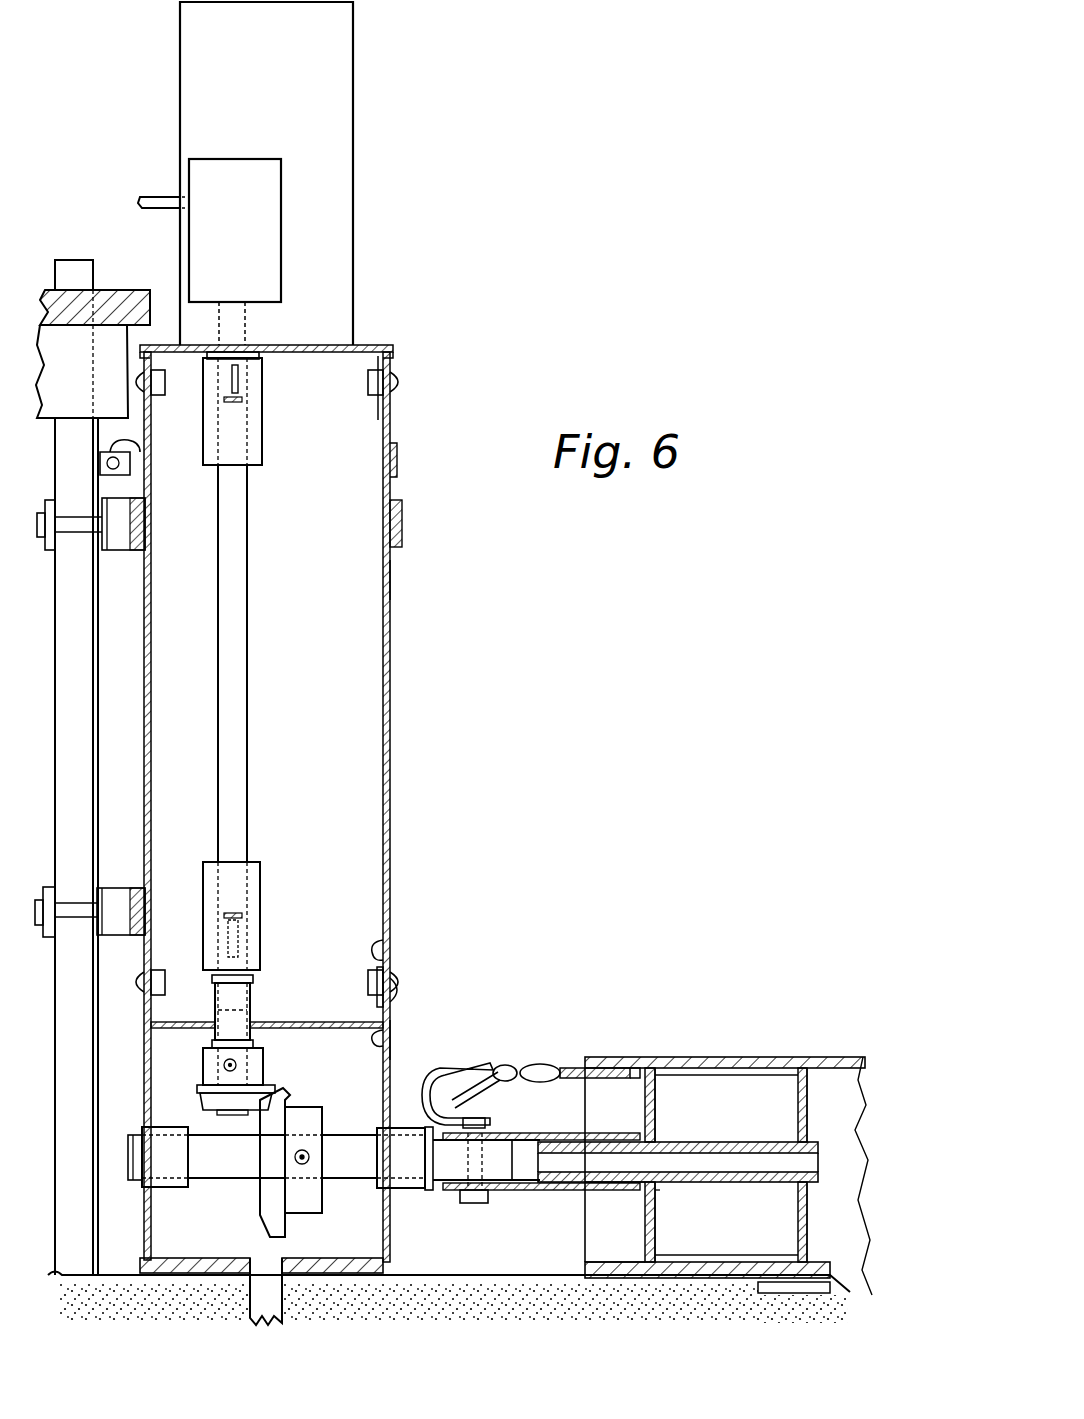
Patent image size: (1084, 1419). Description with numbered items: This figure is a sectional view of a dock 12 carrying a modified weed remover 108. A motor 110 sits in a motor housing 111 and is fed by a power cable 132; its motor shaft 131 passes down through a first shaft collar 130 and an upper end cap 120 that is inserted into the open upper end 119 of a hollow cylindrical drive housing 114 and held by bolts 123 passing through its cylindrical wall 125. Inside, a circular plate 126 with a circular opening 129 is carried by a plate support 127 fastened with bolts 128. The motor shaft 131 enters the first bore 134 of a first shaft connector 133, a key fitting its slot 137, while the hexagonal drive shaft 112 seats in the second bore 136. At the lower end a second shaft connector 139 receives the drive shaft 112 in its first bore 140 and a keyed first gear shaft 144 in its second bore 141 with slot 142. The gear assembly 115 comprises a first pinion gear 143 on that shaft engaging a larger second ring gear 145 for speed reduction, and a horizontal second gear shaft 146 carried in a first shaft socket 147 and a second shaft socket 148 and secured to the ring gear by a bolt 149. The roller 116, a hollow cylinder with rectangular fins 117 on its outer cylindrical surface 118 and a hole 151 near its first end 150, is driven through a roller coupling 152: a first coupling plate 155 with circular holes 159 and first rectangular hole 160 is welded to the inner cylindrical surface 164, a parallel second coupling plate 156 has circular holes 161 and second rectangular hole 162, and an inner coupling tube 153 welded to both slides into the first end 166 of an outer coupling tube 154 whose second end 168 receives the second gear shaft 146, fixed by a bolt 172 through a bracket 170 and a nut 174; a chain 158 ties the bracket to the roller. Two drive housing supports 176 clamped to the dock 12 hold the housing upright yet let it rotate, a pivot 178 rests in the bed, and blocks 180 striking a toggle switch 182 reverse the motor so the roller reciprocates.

The dock 12 is at (120, 300).
The weed remover 108 is at (492, 150).
The motor 110 is at (265, 205).
The motor housing 111 is at (330, 125).
The drive shaft 112 is at (230, 620).
The drive housing 114 is at (398, 357).
The gear assembly 115 is at (285, 1062).
The roller 116 is at (735, 1055).
The rectangular fins 117 is at (790, 1288).
The outer cylindrical surface 118 is at (655, 1055).
The upper end 119 is at (392, 370).
The upper end cap 120 is at (370, 345).
The bolts 123 is at (135, 380).
The cylindrical wall 125 is at (392, 578).
The circular plate 126 is at (392, 1045).
The plate support 127 is at (392, 945).
The bolts 128 is at (395, 985).
The circular opening 129 is at (250, 1015).
The first shaft collar 130 is at (255, 347).
The motor shaft 131 is at (235, 315).
The power cable 132 is at (155, 200).
The first shaft connector 133 is at (262, 415).
The first bore 134 is at (240, 382).
The second bore 136 is at (255, 450).
The slot 137 is at (238, 398).
The second shaft connector 139 is at (255, 880).
The first bore 140 is at (262, 862).
The second bore 141 is at (248, 947).
The slot 142 is at (233, 935).
The first pinion gear 143 is at (205, 1062).
The first gear shaft 144 is at (253, 978).
The second ring gear 145 is at (290, 1205).
The second gear shaft 146 is at (322, 1170).
The first shaft socket 147 is at (160, 1160).
The second shaft socket 148 is at (398, 1185).
The bolt 149 is at (303, 1150).
The first end 150 is at (590, 1245).
The hole 151 is at (625, 1060).
The roller coupling 152 is at (500, 1040).
The inner coupling tube 153 is at (720, 1190).
The outer coupling tube 154 is at (545, 1192).
The first coupling plate 155 is at (658, 1192).
The second coupling plate 156 is at (807, 1192).
The chain 158 is at (470, 1068).
The circular holes 159 is at (657, 1065).
The first rectangular hole 160 is at (658, 1130).
The circular holes 161 is at (807, 1092).
The second rectangular hole 162 is at (807, 1132).
The inner cylindrical surface 164 is at (710, 1075).
The first end 166 is at (640, 1200).
The second end 168 is at (440, 1195).
The bracket 170 is at (470, 1110).
The bolt 172 is at (487, 1122).
The nut 174 is at (472, 1205).
The drive housing supports 176 is at (130, 552).
The pivot 178 is at (265, 1290).
The blocks 180 is at (135, 495).
The toggle switch 182 is at (138, 455).